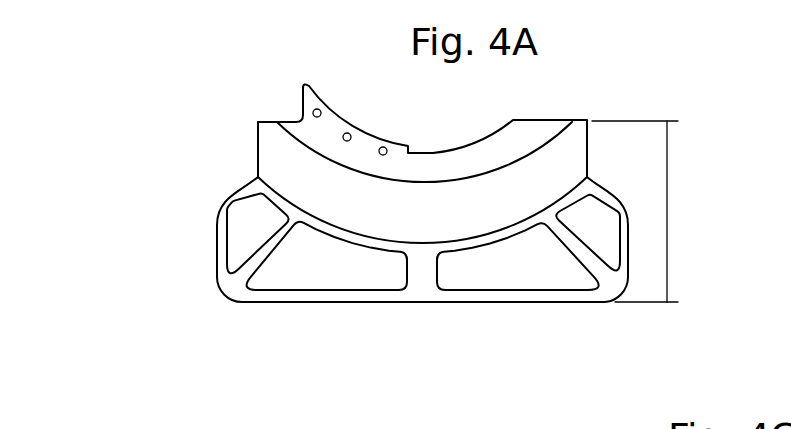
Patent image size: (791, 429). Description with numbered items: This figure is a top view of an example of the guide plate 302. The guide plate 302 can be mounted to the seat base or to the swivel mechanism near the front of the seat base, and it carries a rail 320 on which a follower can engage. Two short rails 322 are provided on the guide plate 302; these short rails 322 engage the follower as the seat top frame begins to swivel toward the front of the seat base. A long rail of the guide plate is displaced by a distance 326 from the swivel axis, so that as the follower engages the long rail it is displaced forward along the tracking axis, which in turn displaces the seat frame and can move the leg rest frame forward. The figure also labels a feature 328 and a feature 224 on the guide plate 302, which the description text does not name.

The guide plate 302 is at (128, 119).
The short rails 322 is at (218, 248).
The rounded corner 328 is at (222, 288).
The rail 320 is at (285, 302).
The bottom surface 224 is at (537, 302).
The distance 326 is at (667, 222).